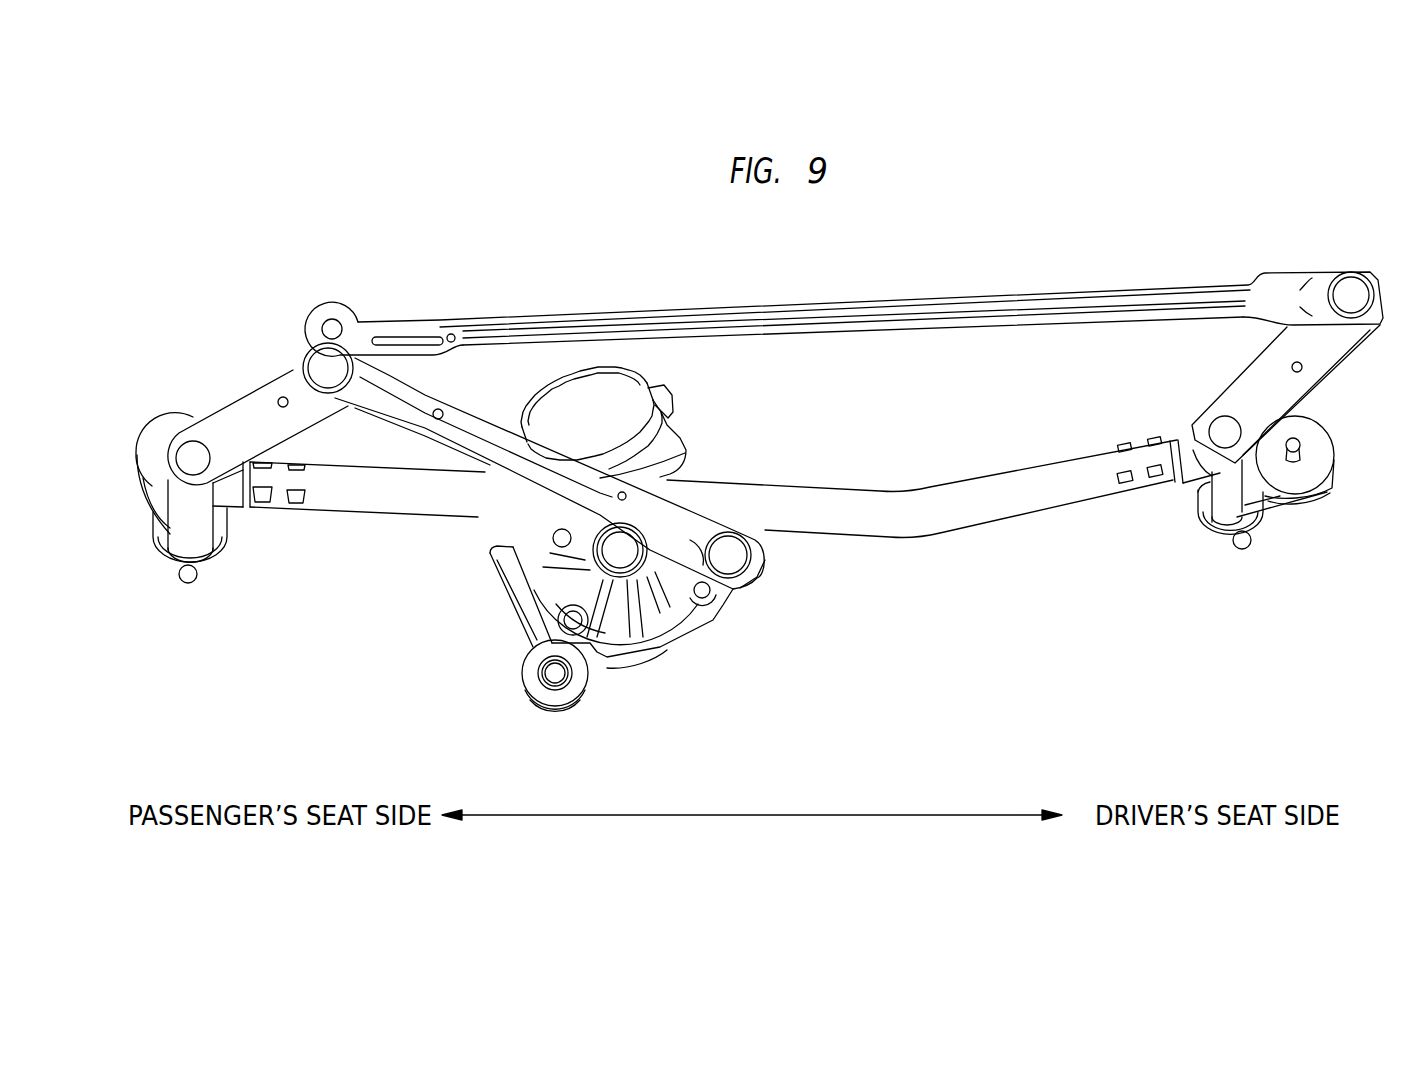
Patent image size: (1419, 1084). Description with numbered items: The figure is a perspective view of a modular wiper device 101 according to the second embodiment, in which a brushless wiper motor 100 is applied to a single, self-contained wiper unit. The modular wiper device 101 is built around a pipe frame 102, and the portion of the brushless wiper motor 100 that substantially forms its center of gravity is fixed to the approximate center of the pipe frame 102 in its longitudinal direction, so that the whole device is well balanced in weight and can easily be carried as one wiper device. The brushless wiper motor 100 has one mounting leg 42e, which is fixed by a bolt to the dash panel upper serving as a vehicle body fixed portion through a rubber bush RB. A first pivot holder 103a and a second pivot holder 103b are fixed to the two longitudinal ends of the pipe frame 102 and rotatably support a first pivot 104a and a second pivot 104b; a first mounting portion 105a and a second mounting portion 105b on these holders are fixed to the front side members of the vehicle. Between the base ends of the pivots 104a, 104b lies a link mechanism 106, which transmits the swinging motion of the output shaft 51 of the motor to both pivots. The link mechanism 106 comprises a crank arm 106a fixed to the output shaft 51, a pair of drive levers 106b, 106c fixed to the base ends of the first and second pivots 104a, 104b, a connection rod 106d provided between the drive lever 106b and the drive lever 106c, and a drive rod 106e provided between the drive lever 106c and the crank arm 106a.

The brushless wiper motor 100 is at (693, 637).
The modular wiper device 101 is at (1063, 602).
The pipe frame 102 is at (890, 513).
The first pivot holder 103a is at (1230, 493).
The second pivot holder 103b is at (192, 532).
The first pivot 104a is at (1247, 548).
The second pivot 104b is at (183, 582).
The first mounting portion 105a is at (1307, 472).
The second mounting portion 105b is at (160, 432).
The link mechanism 106 is at (724, 307).
The crank arm 106a is at (662, 575).
The drive lever 106b is at (1262, 392).
The drive lever 106c is at (246, 423).
The connection rod 106d is at (883, 313).
The drive rod 106e is at (467, 425).
The output shaft 51 is at (620, 553).
The mounting leg 42e is at (557, 640).
The rubber bush RB is at (530, 680).